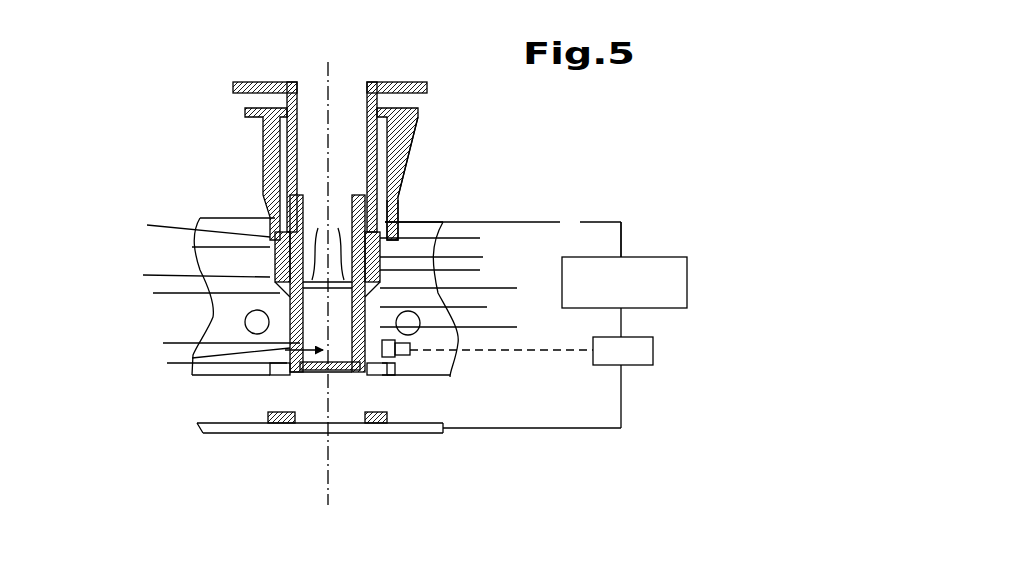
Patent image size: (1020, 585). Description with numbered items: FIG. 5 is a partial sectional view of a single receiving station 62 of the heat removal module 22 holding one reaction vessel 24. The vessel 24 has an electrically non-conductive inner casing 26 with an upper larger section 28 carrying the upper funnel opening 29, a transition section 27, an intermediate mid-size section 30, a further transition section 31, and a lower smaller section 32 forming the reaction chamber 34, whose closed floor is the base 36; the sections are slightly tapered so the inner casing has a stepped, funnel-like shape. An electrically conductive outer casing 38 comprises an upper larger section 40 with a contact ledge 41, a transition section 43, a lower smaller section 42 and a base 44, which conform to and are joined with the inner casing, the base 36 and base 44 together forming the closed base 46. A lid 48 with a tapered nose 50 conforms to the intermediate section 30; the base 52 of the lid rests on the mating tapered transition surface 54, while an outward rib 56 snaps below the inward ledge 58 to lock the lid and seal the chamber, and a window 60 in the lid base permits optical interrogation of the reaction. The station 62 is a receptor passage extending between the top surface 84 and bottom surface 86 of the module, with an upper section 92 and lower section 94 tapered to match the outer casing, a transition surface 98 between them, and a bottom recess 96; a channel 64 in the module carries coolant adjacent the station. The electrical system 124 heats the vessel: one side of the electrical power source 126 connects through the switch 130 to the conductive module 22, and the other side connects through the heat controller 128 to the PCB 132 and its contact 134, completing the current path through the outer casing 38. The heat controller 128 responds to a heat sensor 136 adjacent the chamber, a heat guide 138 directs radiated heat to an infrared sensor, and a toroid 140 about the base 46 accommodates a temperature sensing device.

The module 22 is at (197, 218).
The reaction vessel 24 is at (465, 133).
The inner casing 26 is at (399, 157).
The transition section 27 is at (397, 207).
The upper larger section 28 is at (416, 170).
The upper funnel opening 29 is at (372, 120).
The intermediate mid-size section 30 is at (450, 235).
The transition section 31 is at (450, 302).
The lower smaller section 32 is at (469, 329).
The reaction chamber 34 is at (167, 363).
The base 36 is at (343, 378).
The outer casing 38 is at (450, 272).
The upper larger section 40 is at (469, 259).
The contact ledge 41 is at (398, 232).
The lower smaller section 42 is at (163, 343).
The transition section 43 is at (143, 275).
The base 44 is at (337, 378).
The closed base 46 is at (303, 380).
The lid 48 is at (425, 83).
The tapered nose 50 is at (147, 225).
The base of the lid 52 is at (315, 231).
The transition surface 54 is at (270, 257).
The outward rib 56 is at (263, 127).
The inward ledge 58 is at (288, 99).
The window 60 is at (337, 244).
The receiving station 62 is at (313, 222).
The channel 64 is at (250, 322).
The top surface 84 is at (203, 218).
The bottom surface 86 is at (213, 377).
The upper section 92 is at (469, 296).
The lower section 94 is at (349, 378).
The bottom recess 96 is at (388, 374).
The transition surface 98 is at (153, 293).
The electrical system 124 is at (665, 233).
The electrical power source 126 is at (660, 273).
The heat controller 128 is at (640, 351).
The switch 130 is at (582, 220).
The PCB 132 is at (437, 428).
The contact 134 is at (380, 423).
The heat sensor 136 is at (411, 351).
The heat guide 138 is at (394, 355).
The toroid 140 is at (290, 372).